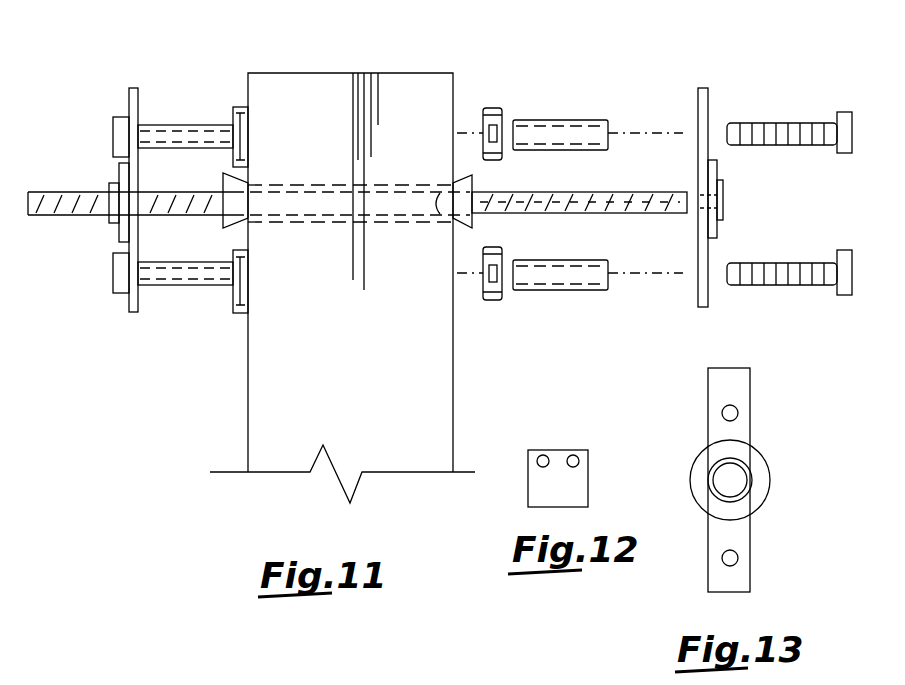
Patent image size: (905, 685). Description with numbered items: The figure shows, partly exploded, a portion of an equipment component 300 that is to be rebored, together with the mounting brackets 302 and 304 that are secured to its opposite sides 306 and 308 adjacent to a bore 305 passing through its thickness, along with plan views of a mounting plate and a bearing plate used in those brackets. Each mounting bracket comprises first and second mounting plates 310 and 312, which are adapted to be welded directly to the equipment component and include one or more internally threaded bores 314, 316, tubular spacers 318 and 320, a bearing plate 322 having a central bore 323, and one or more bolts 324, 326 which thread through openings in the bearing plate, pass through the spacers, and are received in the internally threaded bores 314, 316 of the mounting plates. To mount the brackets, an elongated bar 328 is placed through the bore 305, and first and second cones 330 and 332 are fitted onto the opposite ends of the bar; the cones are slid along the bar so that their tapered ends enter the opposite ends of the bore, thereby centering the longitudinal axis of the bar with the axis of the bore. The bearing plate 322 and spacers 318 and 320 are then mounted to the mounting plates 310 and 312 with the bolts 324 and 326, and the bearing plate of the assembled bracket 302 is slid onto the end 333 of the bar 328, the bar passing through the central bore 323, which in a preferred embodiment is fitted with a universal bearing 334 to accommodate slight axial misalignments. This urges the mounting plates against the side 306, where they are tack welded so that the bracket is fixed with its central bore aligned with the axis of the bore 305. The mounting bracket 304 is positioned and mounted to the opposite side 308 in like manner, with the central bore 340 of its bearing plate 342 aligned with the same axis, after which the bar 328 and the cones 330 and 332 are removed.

In FIG. 11, the equipment component 300 is at (340, 90).
In FIG. 11, the mounting bracket 302 is at (710, 75).
In FIG. 11, the mounting bracket 304 is at (189, 115).
In FIG. 11, the bore 305 is at (330, 215).
In FIG. 11, the side 306 is at (453, 378).
In FIG. 11, the side 308 is at (247, 342).
In FIG. 11, the first mounting plate 310 is at (492, 107).
In FIG. 12, the first mounting plate 310 is at (528, 477).
In FIG. 11, the second mounting plate 312 is at (492, 302).
In FIG. 12, the internally threaded bore 314 is at (543, 455).
In FIG. 12, the internally threaded bore 316 is at (576, 452).
In FIG. 11, the tubular spacer 318 is at (568, 120).
In FIG. 11, the tubular spacer 320 is at (570, 290).
In FIG. 11, the bearing plate 322 is at (708, 90).
In FIG. 13, the bearing plate 322 is at (737, 385).
In FIG. 11, the central bore 323 is at (725, 193).
In FIG. 13, the central bore 323 is at (735, 475).
In FIG. 11, the bolt 324 is at (762, 130).
In FIG. 11, the bolt 326 is at (745, 268).
In FIG. 11, the elongated bar 328 is at (597, 192).
In FIG. 11, the first cone 330 is at (477, 220).
In FIG. 11, the second cone 332 is at (224, 221).
In FIG. 11, the end of the bar 333 is at (673, 213).
In FIG. 11, the universal bearing 334 is at (717, 215).
In FIG. 11, the central bore 340 is at (120, 184).
In FIG. 11, the bearing plate 342 is at (128, 98).